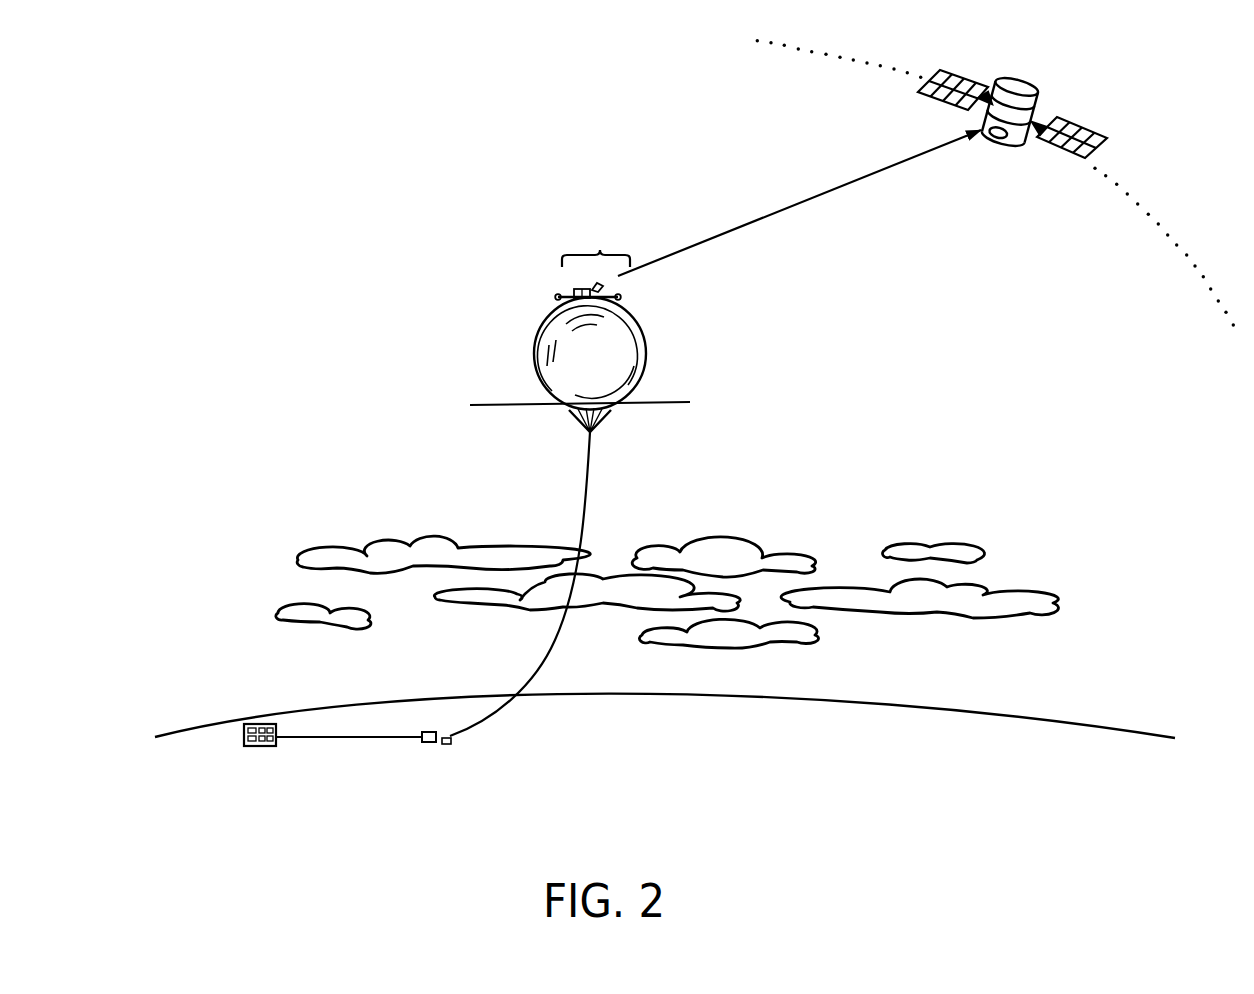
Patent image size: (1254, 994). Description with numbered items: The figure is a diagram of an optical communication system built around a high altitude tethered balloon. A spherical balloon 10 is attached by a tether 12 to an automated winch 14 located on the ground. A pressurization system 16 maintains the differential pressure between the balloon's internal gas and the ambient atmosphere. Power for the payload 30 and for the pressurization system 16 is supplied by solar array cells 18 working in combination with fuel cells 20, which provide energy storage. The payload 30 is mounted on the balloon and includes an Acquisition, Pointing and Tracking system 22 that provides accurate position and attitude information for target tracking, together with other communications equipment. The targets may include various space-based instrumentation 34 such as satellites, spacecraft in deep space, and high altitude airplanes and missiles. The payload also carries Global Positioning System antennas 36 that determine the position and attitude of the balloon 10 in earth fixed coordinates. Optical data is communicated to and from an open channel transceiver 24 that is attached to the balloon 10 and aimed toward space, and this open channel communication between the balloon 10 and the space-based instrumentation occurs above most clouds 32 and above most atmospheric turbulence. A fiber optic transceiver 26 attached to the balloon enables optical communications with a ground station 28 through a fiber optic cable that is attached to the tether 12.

The spherical balloon 10 is at (532, 360).
The tether 12 is at (600, 488).
The automated winch 14 is at (368, 738).
The pressurization system 16 is at (576, 412).
The solar array cells 18 is at (548, 307).
The fuel cells 20 is at (595, 405).
The Acquisition, Pointing and Tracking system 22 is at (606, 289).
The open channel transceiver 24 is at (562, 278).
The fiber optic transceiver 26 is at (606, 417).
The ground station 28 is at (250, 732).
The payload 30 is at (599, 251).
The clouds 32 is at (953, 550).
The space-based instrumentation 34 is at (1012, 114).
The Global Positioning System antennas 36 is at (627, 303).